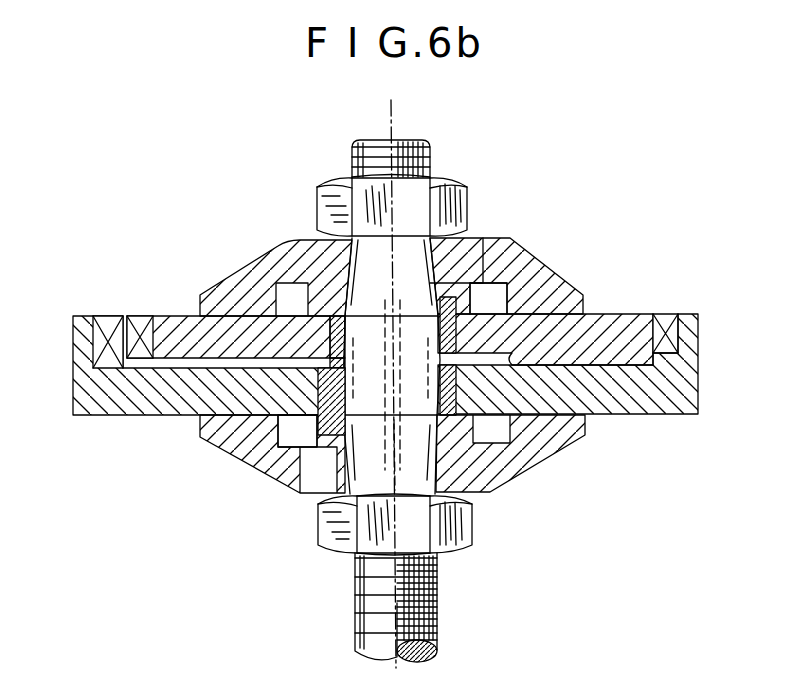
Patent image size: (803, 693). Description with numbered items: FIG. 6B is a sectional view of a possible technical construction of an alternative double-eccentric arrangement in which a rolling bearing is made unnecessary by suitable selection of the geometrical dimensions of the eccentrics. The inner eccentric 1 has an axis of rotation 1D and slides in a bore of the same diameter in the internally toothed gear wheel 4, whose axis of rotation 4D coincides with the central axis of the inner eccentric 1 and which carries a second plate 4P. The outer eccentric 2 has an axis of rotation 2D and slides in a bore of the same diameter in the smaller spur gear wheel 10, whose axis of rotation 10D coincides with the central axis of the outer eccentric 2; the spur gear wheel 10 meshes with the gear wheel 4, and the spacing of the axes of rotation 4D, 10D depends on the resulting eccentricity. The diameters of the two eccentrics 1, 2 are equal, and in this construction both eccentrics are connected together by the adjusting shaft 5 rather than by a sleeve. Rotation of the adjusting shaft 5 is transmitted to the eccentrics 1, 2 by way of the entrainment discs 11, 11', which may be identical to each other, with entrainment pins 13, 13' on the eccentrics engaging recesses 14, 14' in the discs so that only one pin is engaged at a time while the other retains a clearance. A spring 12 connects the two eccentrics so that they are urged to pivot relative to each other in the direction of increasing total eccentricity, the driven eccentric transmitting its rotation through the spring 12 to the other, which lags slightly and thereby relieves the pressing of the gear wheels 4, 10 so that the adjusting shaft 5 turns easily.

The inner eccentric 1 is at (437, 382).
The axis of rotation 1D is at (394, 464).
The outer eccentric 2 is at (346, 330).
The axis of rotation 2D is at (409, 457).
The internally toothed gear wheel 4 is at (98, 343).
The axis of rotation 4D is at (383, 370).
The second plate 4P is at (698, 388).
The adjusting shaft 5 is at (437, 602).
The spur gear wheel 10 is at (628, 323).
The axis of rotation 10D is at (403, 302).
The entrainment disc 11 is at (404, 277).
The entrainment disc 11' is at (399, 454).
The spring 12 is at (345, 367).
The entrainment pin 13 is at (492, 306).
The entrainment pin 13' is at (251, 443).
The recess 14 is at (511, 272).
The recess 14' is at (239, 446).